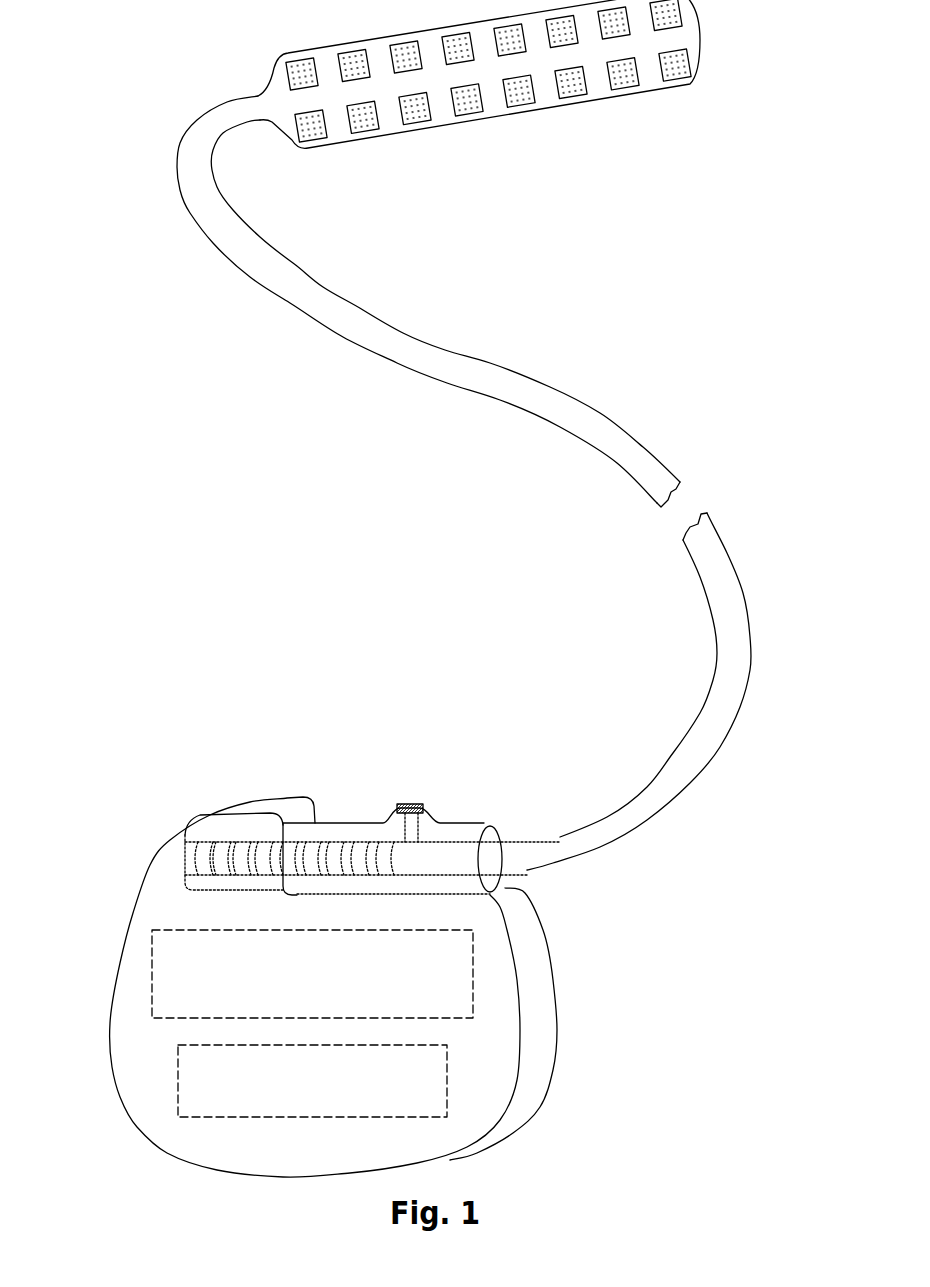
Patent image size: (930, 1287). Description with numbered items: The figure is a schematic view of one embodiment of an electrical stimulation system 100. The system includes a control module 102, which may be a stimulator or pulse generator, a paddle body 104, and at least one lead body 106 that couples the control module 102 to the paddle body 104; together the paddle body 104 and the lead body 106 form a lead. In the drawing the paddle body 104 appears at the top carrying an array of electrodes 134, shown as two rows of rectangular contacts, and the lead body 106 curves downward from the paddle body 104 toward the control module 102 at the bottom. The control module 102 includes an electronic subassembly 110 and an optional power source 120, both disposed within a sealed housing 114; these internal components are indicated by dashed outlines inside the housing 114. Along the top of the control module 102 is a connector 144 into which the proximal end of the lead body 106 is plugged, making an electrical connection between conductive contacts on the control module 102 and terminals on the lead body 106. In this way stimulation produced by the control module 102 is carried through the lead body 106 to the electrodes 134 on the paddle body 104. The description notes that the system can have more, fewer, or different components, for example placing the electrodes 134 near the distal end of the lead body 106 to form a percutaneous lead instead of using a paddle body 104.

The electrical stimulation system 100 is at (625, 356).
The control module 102 is at (159, 796).
The paddle body 104 is at (687, 33).
The lead body 106 is at (488, 363).
The electronic subassembly 110 is at (167, 970).
The sealed housing 114 is at (167, 908).
The power source 120 is at (190, 1077).
The electrodes 134 is at (703, 94).
The connector 144 is at (352, 823).